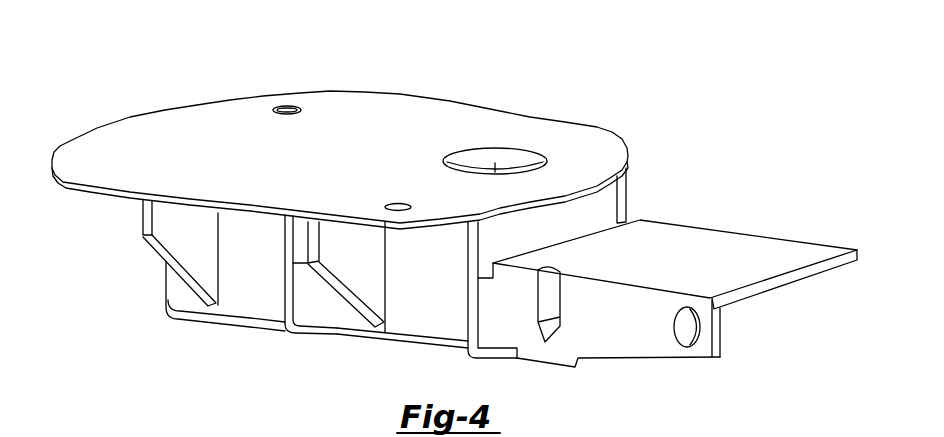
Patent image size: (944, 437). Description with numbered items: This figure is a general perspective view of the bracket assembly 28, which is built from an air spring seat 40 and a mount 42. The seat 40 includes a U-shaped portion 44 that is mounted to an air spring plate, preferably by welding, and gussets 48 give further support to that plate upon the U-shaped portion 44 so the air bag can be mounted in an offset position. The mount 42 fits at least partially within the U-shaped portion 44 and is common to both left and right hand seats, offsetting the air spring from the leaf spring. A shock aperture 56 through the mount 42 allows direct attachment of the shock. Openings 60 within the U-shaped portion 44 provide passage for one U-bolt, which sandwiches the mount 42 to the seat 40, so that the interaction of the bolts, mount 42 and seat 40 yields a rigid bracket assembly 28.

The bracket assembly 28 is at (454, 206).
The air spring seat 40 is at (209, 120).
The mount 42 is at (745, 208).
The U-shaped portion 44 is at (438, 333).
The gussets 48 is at (206, 273).
The shock aperture 56 is at (697, 343).
The openings 60 is at (303, 333).